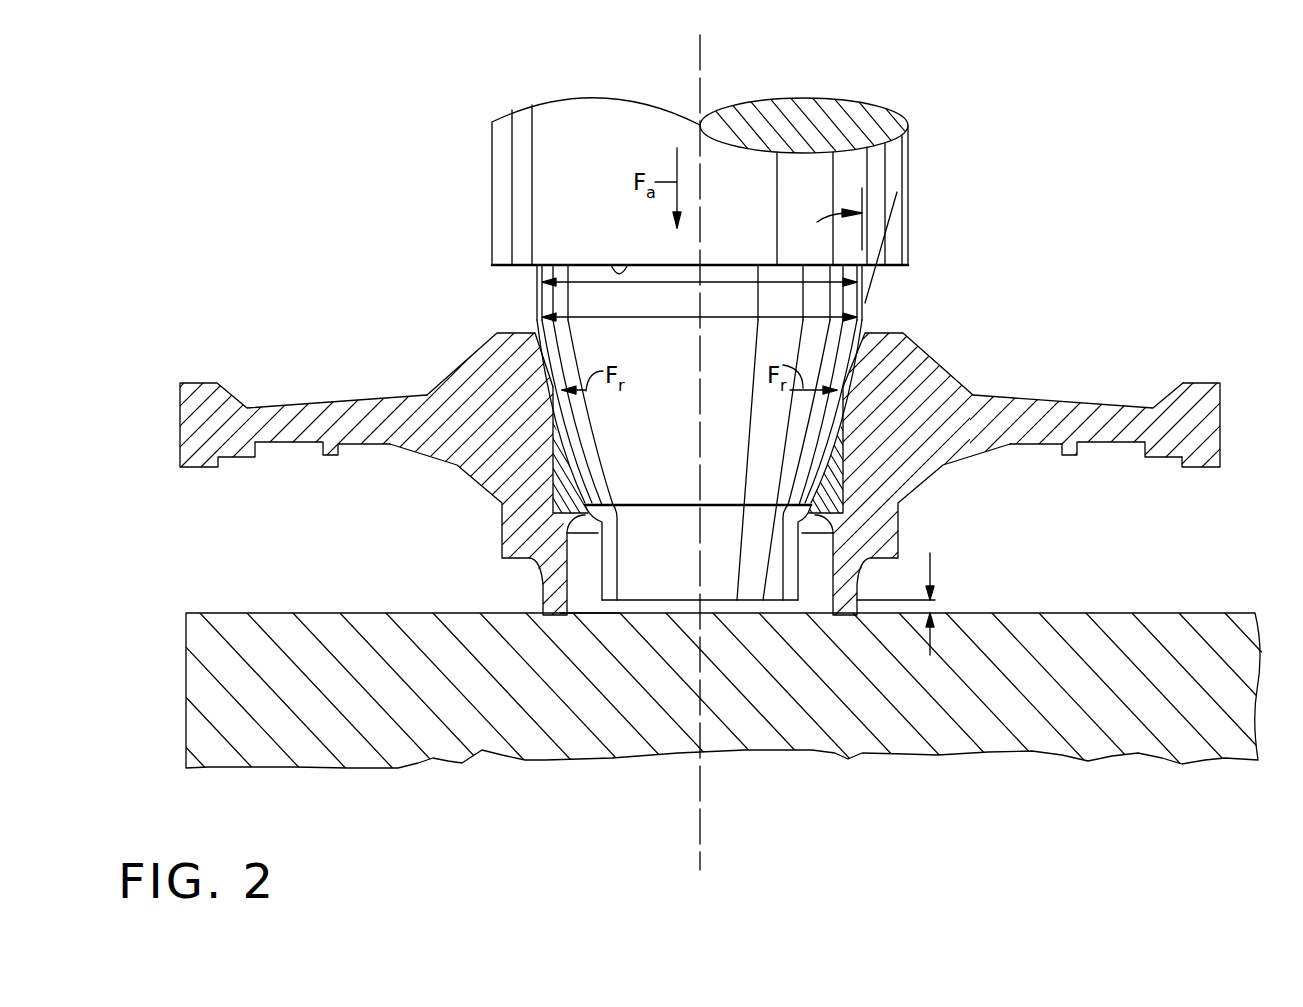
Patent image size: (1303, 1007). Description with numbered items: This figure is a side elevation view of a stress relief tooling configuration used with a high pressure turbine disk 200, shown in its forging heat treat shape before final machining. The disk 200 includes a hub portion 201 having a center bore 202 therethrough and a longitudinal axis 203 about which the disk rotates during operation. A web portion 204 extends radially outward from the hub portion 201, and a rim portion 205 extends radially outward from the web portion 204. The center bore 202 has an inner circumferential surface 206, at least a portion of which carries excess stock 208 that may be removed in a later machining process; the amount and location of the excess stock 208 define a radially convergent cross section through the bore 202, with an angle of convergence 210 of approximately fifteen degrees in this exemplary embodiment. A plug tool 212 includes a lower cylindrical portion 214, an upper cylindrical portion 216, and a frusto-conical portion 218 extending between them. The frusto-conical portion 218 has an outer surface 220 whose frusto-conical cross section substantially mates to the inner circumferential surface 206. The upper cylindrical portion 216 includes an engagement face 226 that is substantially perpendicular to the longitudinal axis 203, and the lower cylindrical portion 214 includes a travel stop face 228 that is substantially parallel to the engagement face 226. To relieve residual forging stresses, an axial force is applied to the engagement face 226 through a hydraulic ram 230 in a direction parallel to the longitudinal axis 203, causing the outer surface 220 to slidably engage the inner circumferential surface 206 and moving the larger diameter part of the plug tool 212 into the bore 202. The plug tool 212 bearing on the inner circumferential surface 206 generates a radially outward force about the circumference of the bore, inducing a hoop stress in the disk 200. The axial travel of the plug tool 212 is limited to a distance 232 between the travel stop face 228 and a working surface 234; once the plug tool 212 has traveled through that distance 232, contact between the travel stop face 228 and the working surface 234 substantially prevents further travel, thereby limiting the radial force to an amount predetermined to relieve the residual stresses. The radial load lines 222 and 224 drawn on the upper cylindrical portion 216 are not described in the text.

The high pressure turbine disk 200 is at (378, 417).
The hub portion 201 is at (930, 375).
The center bore 202 is at (580, 627).
The longitudinal axis 203 is at (701, 70).
The web portion 204 is at (1082, 412).
The rim portion 205 is at (1203, 407).
The inner circumferential surface 206 is at (567, 445).
The excess stock 208 is at (545, 349).
The angle of convergence 210 is at (894, 217).
The plug tool 212 is at (555, 434).
The lower cylindrical portion 214 is at (693, 562).
The upper cylindrical portion 216 is at (656, 310).
The frusto-conical portion 218 is at (688, 365).
The outer surface 220 is at (845, 448).
The upper radial load line 222 is at (705, 278).
The lower radial load line 224 is at (588, 317).
The engagement face 226 is at (611, 265).
The travel stop face 228 is at (717, 600).
The hydraulic ram 230 is at (622, 157).
The distance 232 is at (932, 568).
The working surface 234 is at (1071, 613).